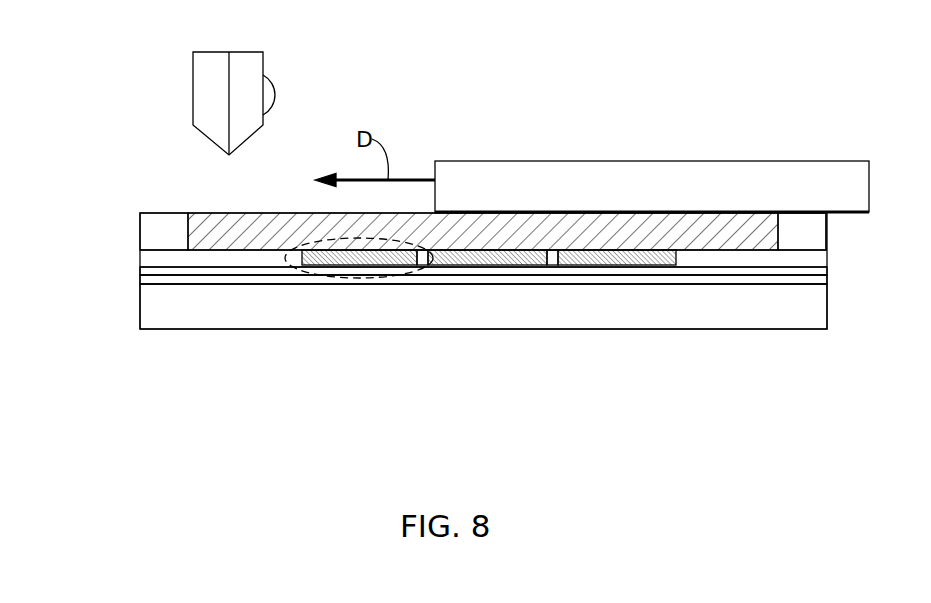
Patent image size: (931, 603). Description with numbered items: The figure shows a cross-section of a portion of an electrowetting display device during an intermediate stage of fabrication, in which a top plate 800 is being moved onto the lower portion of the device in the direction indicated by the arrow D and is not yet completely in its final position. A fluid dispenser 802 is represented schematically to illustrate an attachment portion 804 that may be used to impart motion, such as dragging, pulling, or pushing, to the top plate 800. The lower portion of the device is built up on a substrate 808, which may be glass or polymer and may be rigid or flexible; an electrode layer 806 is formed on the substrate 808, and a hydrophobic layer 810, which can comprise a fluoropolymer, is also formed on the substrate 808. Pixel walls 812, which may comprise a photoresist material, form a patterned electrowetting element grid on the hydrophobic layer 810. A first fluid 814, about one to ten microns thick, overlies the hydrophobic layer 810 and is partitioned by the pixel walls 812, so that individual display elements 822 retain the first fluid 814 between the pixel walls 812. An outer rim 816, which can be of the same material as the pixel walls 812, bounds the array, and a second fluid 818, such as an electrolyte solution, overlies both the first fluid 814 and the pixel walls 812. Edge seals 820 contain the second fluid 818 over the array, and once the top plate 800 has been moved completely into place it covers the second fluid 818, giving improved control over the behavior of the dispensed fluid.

The top plate 800 is at (747, 191).
The fluid dispenser 802 is at (193, 78).
The attachment portion 804 is at (277, 97).
The electrode layer 806 is at (140, 282).
The substrate 808 is at (215, 315).
The hydrophobic layer 810 is at (140, 270).
The pixel walls 812 is at (553, 266).
The first fluid 814 is at (600, 266).
The outer rim 816 is at (140, 258).
The second fluid 818 is at (593, 212).
The edge seals 820 is at (827, 228).
The individual display elements 822 is at (362, 279).